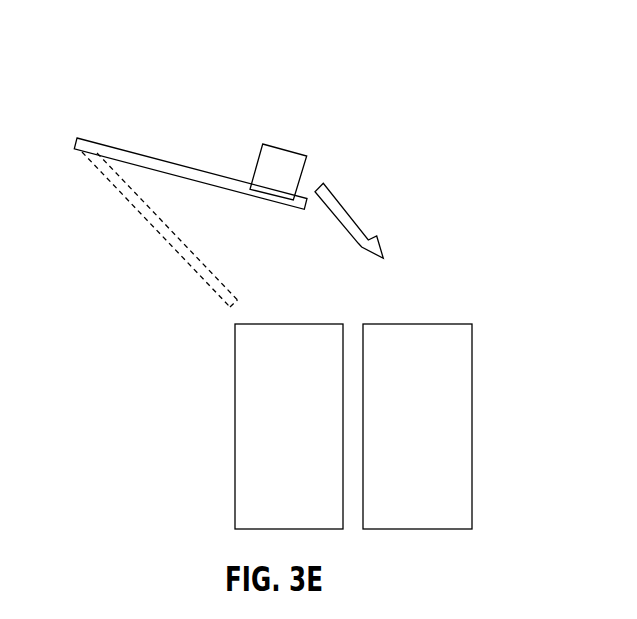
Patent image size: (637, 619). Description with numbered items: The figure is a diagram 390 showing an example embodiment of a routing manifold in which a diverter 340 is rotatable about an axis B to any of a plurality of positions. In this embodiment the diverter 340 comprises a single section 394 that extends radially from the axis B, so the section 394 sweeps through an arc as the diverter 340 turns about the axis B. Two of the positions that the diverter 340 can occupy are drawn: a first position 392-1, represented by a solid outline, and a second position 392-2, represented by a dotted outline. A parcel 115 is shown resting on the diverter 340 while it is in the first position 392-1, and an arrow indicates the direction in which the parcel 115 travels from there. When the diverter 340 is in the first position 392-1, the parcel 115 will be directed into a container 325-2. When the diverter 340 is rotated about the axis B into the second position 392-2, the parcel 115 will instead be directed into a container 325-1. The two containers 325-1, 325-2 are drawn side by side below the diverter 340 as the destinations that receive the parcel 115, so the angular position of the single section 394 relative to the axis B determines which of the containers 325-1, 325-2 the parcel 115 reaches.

The diagram 390 is at (422, 64).
The single section 394 is at (236, 137).
The first position 392-1 is at (147, 113).
The diverter 340 is at (190, 173).
The axis B is at (78, 136).
The parcel 115 is at (287, 148).
The second position 392-2 is at (190, 250).
The container 325-1 is at (320, 438).
The container 325-2 is at (450, 438).